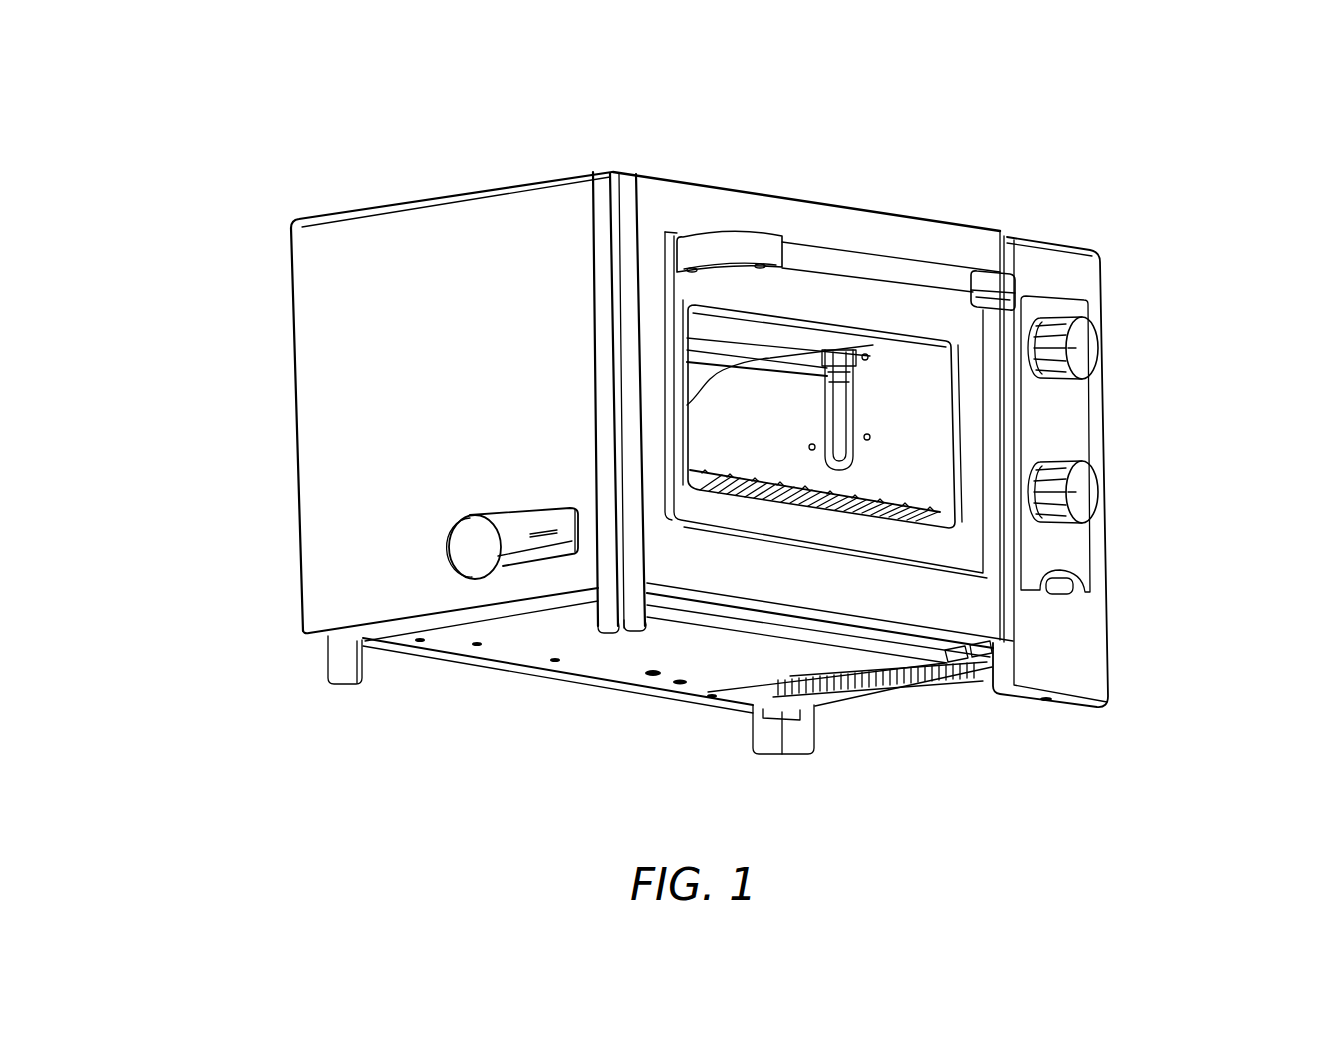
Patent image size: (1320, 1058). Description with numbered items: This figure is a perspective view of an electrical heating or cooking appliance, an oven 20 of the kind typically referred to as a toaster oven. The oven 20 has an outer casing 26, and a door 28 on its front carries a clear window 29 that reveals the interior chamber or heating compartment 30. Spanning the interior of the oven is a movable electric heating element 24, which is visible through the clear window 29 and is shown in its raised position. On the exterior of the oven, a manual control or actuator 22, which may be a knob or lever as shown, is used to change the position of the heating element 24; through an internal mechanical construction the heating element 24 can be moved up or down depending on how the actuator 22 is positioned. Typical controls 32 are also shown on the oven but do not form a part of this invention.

The oven 20 is at (337, 168).
The manual control or actuator 22 is at (490, 542).
The heating element 24 is at (768, 360).
The outer casing 26 is at (353, 377).
The door 28 is at (770, 214).
The clear window 29 is at (910, 427).
The interior chamber or heating compartment 30 is at (943, 467).
The controls 32 is at (1090, 355).